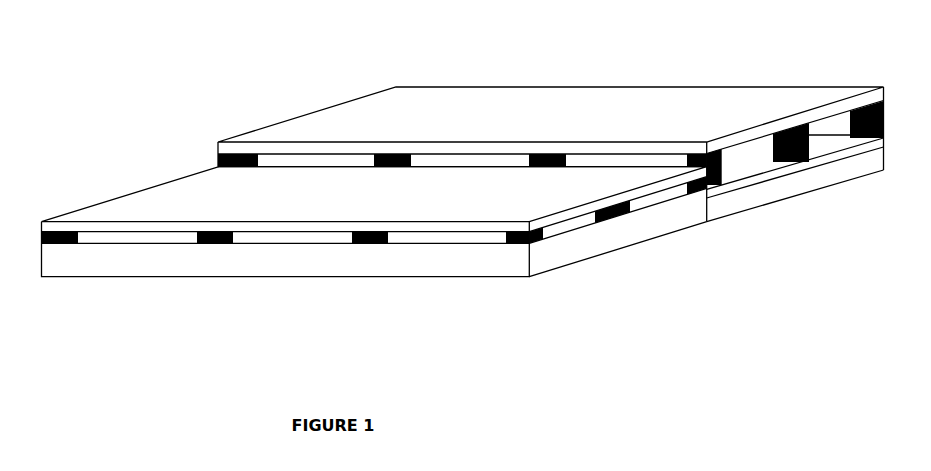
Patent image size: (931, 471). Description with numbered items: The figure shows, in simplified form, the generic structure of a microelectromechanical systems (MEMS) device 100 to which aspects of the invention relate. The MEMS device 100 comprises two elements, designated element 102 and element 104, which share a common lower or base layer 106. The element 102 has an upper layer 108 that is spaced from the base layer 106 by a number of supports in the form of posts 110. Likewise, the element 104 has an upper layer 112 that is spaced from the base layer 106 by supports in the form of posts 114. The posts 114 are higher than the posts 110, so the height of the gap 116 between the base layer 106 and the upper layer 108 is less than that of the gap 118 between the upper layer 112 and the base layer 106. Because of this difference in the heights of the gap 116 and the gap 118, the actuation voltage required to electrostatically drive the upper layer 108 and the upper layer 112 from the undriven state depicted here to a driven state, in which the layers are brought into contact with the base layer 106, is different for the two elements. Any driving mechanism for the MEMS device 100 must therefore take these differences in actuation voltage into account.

The MEMS device 100 is at (466, 178).
The element 102 is at (374, 227).
The element 104 is at (553, 156).
The base layer 106 is at (546, 256).
The upper layer 108 is at (399, 206).
The posts 110 is at (355, 243).
The upper layer 112 is at (628, 122).
The posts 114 is at (810, 148).
The gap 116 is at (477, 235).
The gap 118 is at (747, 160).